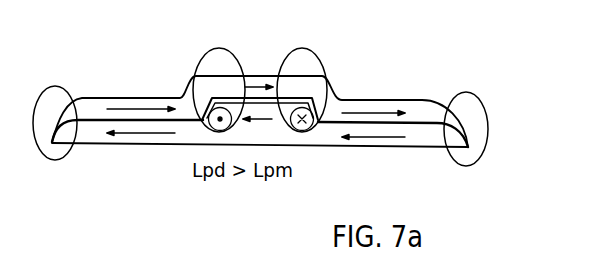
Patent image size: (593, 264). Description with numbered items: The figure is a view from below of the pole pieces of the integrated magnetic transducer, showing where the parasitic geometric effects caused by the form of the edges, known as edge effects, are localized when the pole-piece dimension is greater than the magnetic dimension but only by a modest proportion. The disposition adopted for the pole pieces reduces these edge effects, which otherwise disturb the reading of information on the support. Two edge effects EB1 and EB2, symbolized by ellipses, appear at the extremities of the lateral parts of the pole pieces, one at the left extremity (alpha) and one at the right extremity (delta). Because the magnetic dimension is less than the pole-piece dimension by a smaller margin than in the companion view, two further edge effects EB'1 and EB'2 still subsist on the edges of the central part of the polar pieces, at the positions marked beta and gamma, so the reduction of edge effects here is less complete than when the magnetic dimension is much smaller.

The edge effect EB1 is at (52, 123).
The edge effect EB2 is at (483, 118).
The edge effect EB'1 is at (208, 78).
The edge effect EB'2 is at (319, 78).